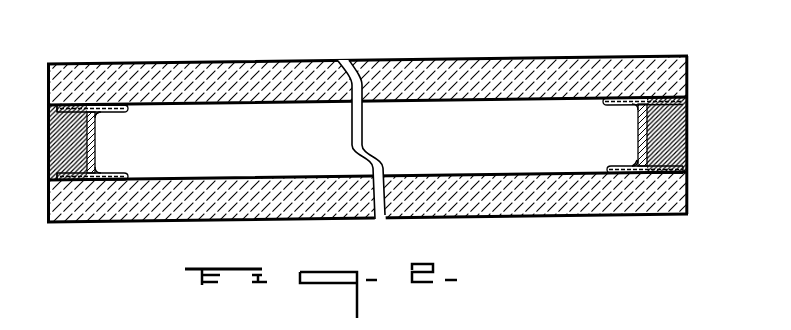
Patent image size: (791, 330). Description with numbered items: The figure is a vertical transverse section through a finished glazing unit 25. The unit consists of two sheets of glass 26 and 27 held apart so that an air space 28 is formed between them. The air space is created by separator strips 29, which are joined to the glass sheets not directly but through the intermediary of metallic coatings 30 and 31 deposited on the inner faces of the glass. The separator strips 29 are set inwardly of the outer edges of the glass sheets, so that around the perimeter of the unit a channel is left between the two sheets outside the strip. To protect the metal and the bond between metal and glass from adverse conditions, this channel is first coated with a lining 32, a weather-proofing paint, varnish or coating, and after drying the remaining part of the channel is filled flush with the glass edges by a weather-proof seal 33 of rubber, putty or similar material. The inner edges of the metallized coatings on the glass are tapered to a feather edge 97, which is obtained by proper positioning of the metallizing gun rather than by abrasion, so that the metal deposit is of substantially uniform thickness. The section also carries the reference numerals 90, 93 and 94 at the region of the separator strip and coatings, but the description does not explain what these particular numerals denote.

The glazing unit 25 is at (73, 56).
The sheet of glass 26 is at (258, 80).
The sheet of glass 27 is at (158, 212).
The air space 28 is at (442, 120).
The separator strip 29 is at (95, 142).
The metallic coating 30 is at (628, 98).
The metallic coating 31 is at (119, 175).
The lining 32 is at (47, 150).
The weather-proof seal 33 is at (46, 132).
The bond layer 90 is at (84, 184).
The fillet 93 is at (97, 115).
The flange edge 94 is at (82, 107).
The feather edge 97 is at (119, 106).